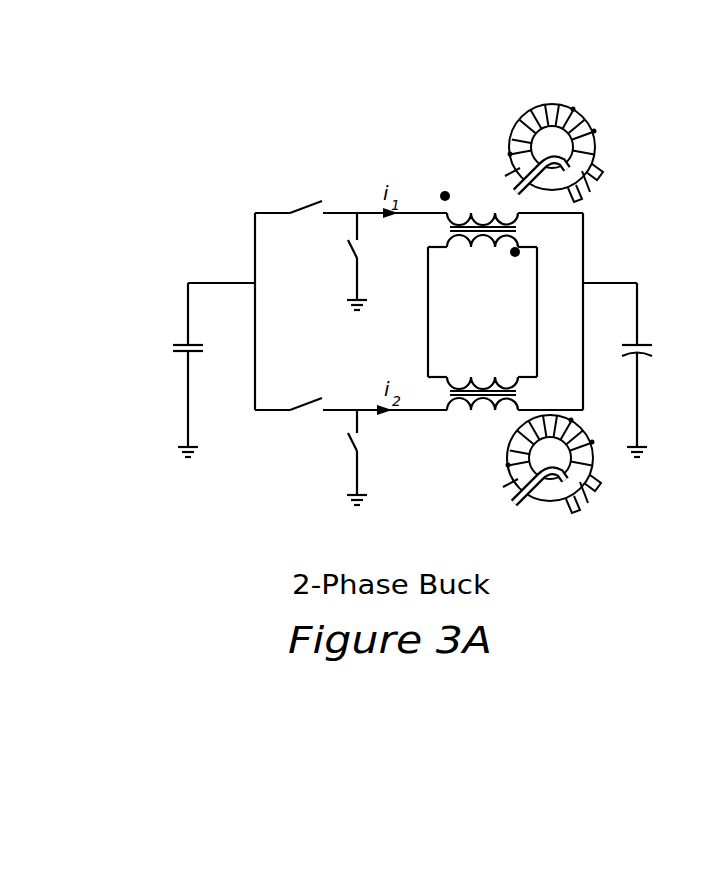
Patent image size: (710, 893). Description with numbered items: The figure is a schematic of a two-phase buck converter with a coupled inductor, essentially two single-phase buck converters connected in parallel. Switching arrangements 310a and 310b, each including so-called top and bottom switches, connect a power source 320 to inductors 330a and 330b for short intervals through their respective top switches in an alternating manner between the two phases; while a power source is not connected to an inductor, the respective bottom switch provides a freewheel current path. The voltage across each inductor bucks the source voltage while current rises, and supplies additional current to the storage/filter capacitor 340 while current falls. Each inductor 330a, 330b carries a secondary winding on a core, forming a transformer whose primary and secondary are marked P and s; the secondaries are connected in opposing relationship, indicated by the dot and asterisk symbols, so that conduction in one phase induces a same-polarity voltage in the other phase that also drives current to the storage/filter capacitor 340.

The switching arrangement 310a is at (327, 205).
The switching arrangement 310b is at (316, 412).
The power source 320 is at (183, 345).
The inductor 330a is at (466, 207).
The inductor 330b is at (473, 410).
The storage/filter capacitor 340 is at (638, 343).